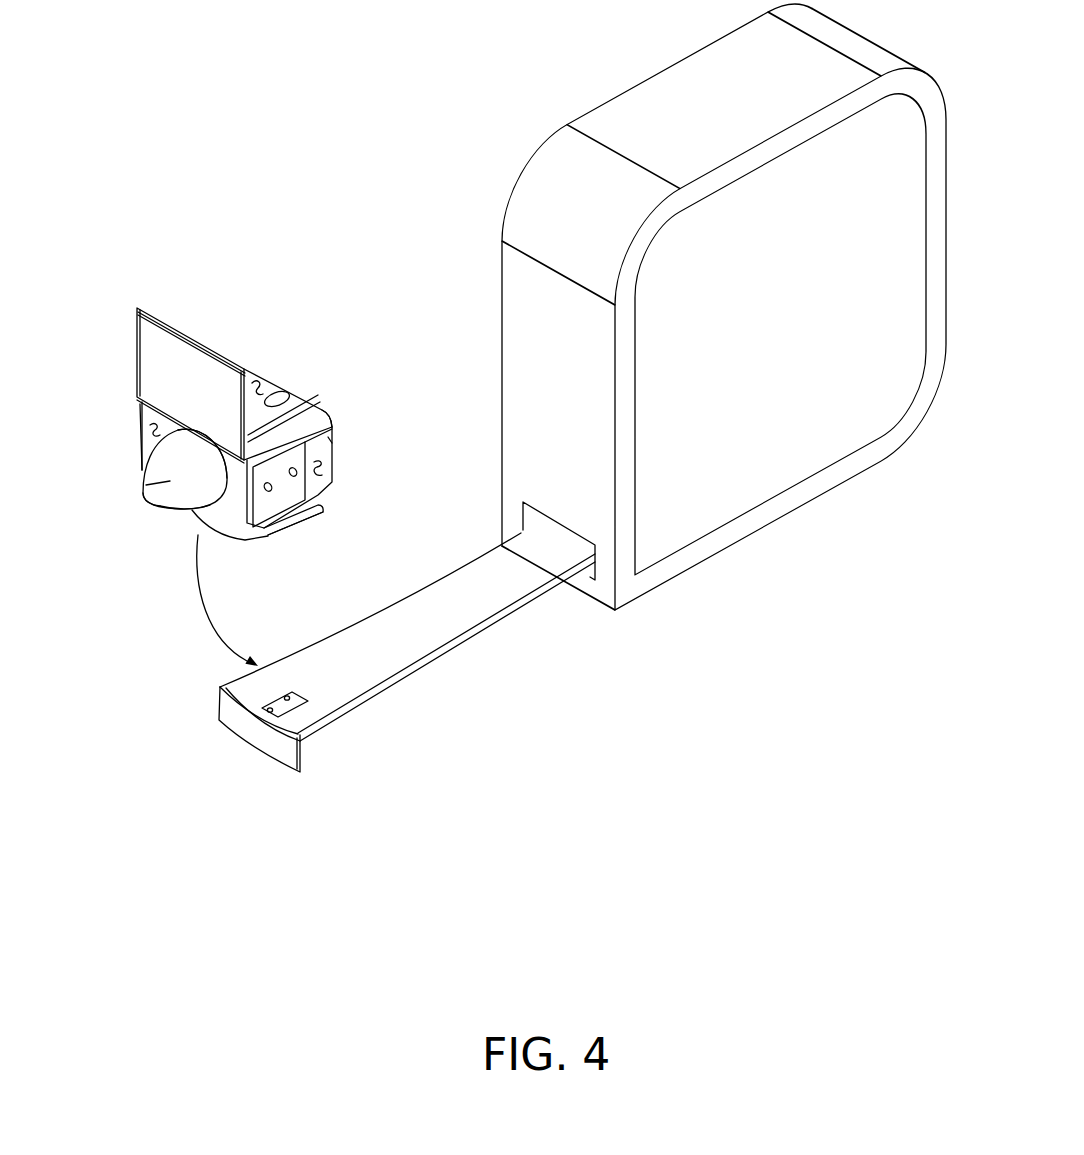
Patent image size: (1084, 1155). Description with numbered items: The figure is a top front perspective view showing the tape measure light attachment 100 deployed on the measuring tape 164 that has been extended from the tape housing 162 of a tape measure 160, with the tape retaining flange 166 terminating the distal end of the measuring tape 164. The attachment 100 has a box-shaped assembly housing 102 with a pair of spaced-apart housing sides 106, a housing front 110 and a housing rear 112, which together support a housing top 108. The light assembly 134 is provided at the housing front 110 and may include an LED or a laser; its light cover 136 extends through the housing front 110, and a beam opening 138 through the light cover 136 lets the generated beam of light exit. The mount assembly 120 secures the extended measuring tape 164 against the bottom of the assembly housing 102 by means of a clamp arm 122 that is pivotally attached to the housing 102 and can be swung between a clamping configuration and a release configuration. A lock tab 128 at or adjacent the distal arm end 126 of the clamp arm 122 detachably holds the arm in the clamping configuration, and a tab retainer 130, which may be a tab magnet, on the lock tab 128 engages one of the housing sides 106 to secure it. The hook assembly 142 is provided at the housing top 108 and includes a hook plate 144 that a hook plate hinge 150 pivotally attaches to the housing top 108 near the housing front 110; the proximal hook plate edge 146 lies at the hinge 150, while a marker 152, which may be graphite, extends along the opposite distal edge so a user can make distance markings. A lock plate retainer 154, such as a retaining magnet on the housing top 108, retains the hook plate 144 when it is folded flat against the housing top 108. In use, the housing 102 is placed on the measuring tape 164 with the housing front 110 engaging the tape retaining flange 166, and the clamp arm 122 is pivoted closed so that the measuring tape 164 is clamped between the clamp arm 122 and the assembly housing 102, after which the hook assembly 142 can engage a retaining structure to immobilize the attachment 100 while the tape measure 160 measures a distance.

The tape measure light attachment 100 is at (128, 270).
The assembly housing 102 is at (345, 493).
The housing sides 106 is at (140, 411).
The housing top 108 is at (256, 382).
The housing front 110 is at (150, 427).
The housing rear 112 is at (335, 458).
The mount assembly 120 is at (315, 540).
The clamp arm 122 is at (194, 530).
The distal arm end 126 is at (314, 509).
The lock tab 128 is at (335, 436).
The tab retainer 130 is at (293, 477).
The light assembly 134 is at (140, 521).
The light cover 136 is at (168, 482).
The beam opening 138 is at (132, 502).
The hook assembly 142 is at (121, 328).
The hook plate 144 is at (122, 357).
The proximal hook plate edge 146 is at (188, 452).
The hook plate hinge 150 is at (325, 410).
The marker 152 is at (139, 307).
The lock plate retainer 154 is at (281, 393).
The tape measure 160 is at (652, 62).
The tape housing 162 is at (860, 418).
The measuring tape 164 is at (496, 590).
The tape retaining flange 166 is at (288, 748).